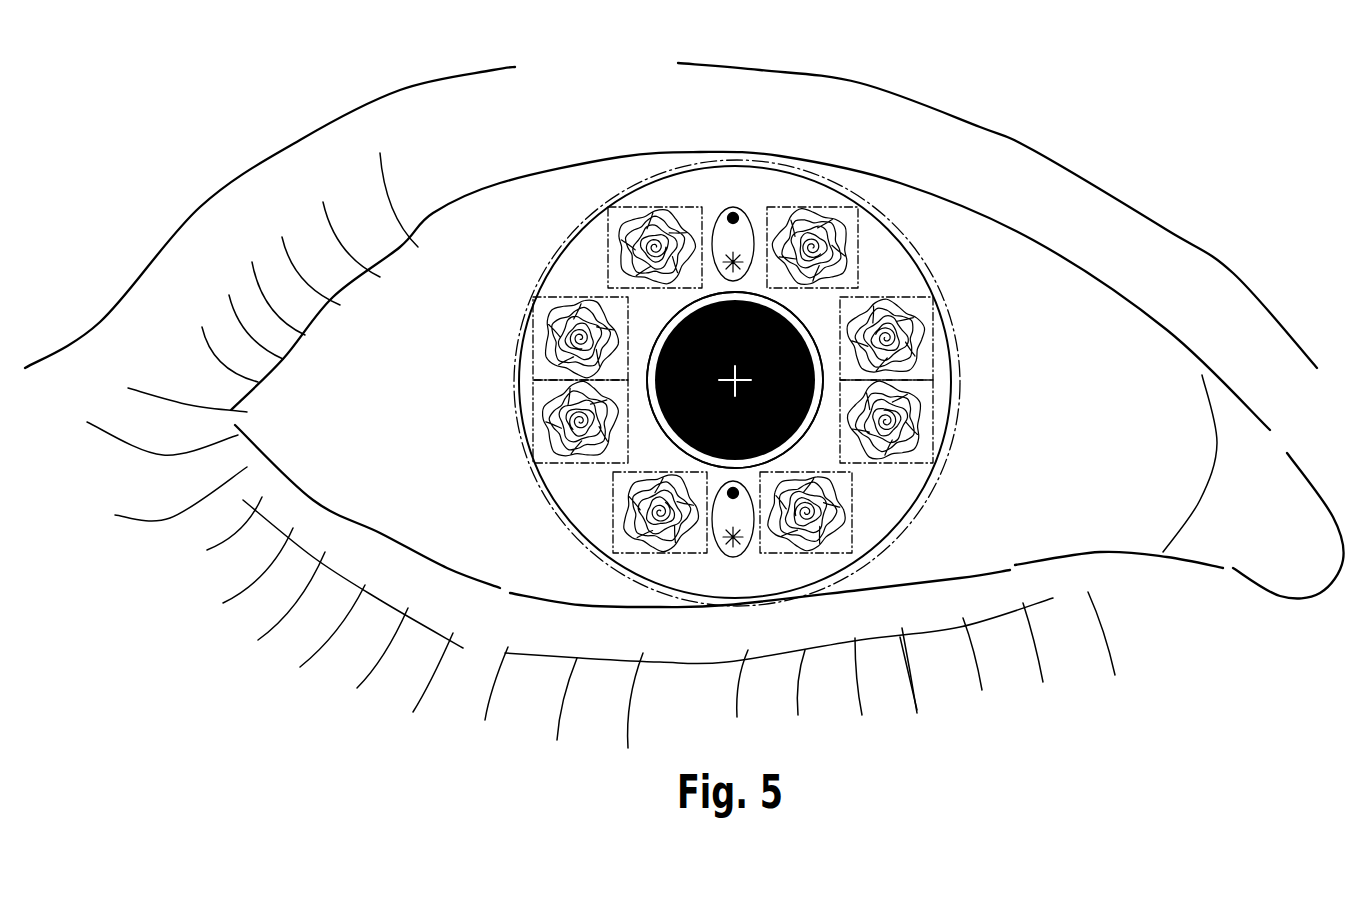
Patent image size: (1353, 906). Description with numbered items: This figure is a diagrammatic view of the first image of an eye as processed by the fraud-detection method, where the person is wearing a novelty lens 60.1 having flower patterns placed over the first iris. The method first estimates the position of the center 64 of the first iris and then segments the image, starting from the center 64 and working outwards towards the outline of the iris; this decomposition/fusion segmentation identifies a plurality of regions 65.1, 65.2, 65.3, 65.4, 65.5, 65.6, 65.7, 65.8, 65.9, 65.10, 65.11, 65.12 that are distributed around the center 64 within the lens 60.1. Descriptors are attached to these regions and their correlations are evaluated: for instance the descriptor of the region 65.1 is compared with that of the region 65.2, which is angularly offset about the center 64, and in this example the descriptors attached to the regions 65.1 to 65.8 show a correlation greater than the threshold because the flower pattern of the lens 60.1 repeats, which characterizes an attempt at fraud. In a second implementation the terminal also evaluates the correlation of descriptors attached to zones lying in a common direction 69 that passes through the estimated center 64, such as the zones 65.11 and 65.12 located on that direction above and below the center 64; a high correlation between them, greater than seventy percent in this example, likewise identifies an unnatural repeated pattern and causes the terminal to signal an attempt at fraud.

The common direction 69 is at (734, 752).
The novelty lens 60.1 is at (877, 206).
The center of the first iris 64 is at (733, 383).
The region 65.1 is at (608, 243).
The region 65.2 is at (535, 352).
The region 65.3 is at (533, 420).
The region 65.4 is at (613, 502).
The region 65.5 is at (858, 550).
The region 65.6 is at (933, 422).
The region 65.7 is at (933, 362).
The region 65.8 is at (860, 238).
The region 65.9 is at (802, 317).
The region 65.10 is at (677, 323).
The zone 65.11 is at (722, 558).
The zone 65.12 is at (729, 210).